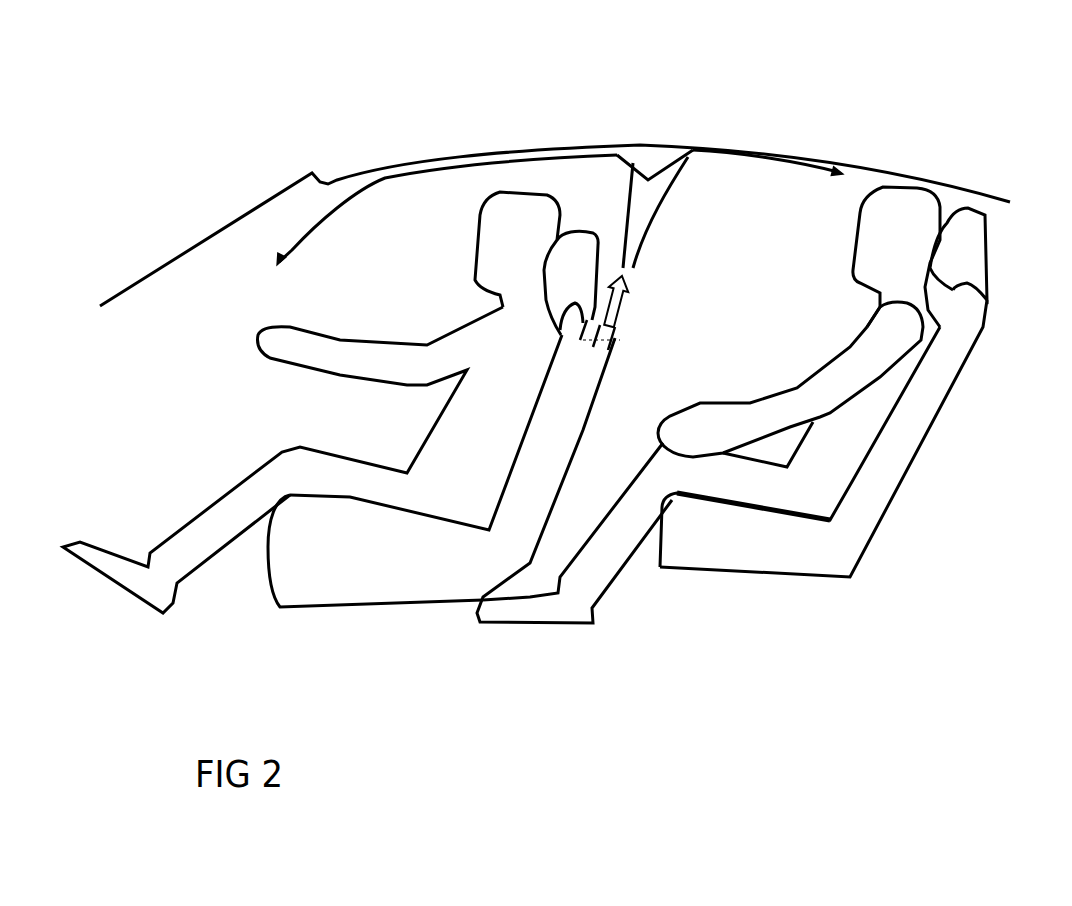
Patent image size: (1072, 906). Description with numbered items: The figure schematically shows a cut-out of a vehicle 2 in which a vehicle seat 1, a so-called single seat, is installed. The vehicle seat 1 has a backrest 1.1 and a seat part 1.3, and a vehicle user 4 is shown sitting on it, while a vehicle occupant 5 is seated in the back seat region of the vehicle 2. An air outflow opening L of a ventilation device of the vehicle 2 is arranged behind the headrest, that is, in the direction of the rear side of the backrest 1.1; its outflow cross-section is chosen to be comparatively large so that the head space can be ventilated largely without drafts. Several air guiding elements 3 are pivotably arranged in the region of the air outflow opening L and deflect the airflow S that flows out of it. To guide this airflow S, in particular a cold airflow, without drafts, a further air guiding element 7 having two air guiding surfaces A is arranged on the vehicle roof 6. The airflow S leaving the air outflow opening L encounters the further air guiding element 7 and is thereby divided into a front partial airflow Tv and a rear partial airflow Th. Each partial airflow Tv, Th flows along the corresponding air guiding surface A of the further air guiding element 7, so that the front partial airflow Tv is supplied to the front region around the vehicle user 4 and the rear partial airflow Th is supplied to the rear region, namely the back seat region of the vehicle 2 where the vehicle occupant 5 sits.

The vehicle seat 1 is at (477, 463).
The backrest 1.1 is at (552, 445).
The seat part 1.3 is at (572, 270).
The vehicle 2 is at (922, 121).
The air guiding elements 3 is at (616, 344).
The vehicle user 4 is at (459, 430).
The vehicle occupant 5 is at (857, 440).
The vehicle roof 6 is at (590, 143).
The further air guiding element 7 is at (657, 153).
The airflow S is at (630, 283).
The air outflow opening L is at (583, 340).
The air guiding surfaces A is at (617, 162).
The front partial airflow Tv is at (340, 183).
The rear partial airflow Th is at (773, 155).